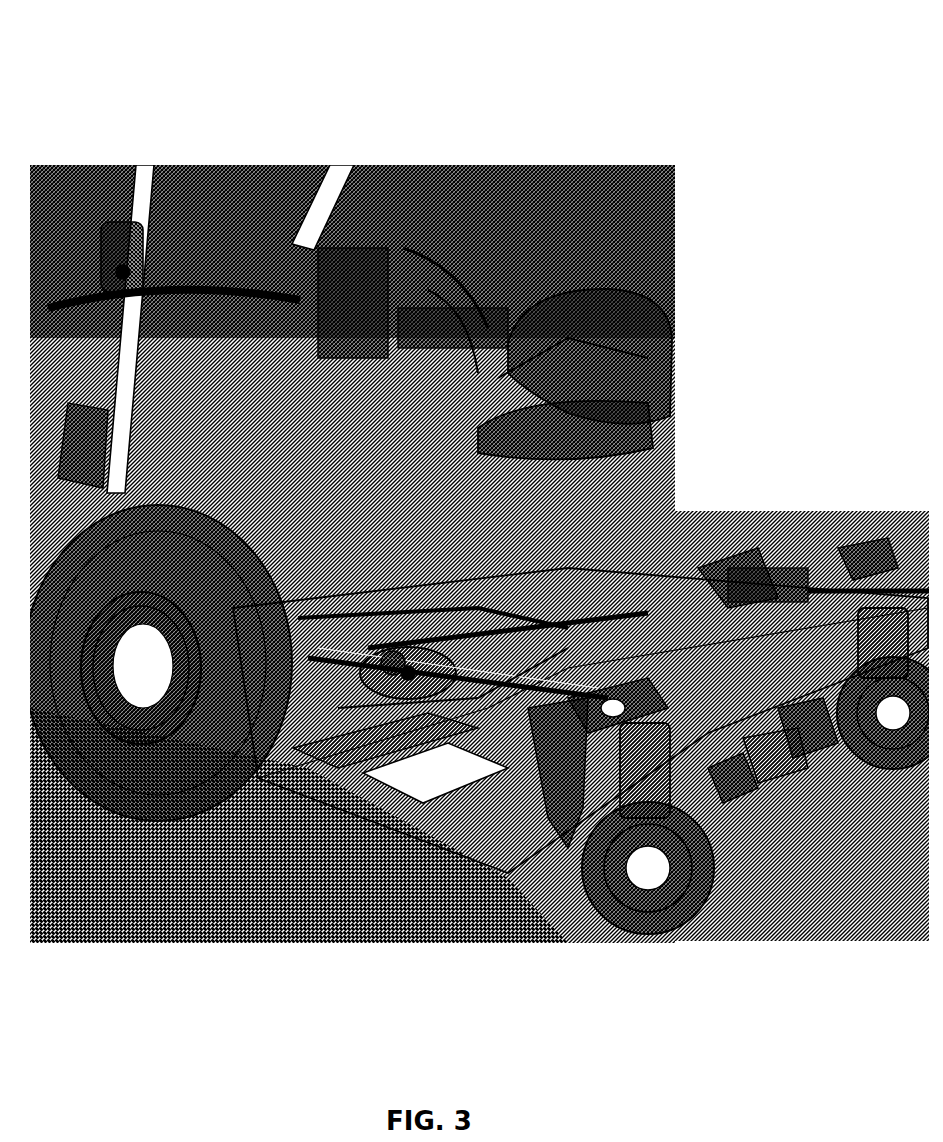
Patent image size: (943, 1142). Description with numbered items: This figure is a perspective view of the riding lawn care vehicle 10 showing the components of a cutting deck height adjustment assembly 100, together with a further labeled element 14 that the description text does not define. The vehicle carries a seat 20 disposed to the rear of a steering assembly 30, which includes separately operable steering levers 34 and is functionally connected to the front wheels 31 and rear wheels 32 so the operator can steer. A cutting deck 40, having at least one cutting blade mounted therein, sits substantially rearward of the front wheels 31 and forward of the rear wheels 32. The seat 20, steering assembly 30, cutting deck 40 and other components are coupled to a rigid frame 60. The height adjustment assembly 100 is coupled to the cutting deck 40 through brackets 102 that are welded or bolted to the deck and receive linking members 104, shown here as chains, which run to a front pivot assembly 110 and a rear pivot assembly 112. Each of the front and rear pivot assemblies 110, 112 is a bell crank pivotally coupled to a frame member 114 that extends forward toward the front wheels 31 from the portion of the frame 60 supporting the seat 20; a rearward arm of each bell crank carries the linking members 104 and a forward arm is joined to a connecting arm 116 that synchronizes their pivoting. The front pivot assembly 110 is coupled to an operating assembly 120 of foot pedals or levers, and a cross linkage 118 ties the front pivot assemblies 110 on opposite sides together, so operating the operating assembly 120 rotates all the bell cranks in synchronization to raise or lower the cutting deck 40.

The riding lawn care vehicle 10 is at (728, 174).
The frame 14 is at (598, 272).
The seat 20 is at (312, 212).
The steering assembly 30 is at (666, 300).
The front wheels 31 is at (880, 765).
The rear wheels 32 is at (140, 760).
The steering levers 34 is at (560, 330).
The cutting deck 40 is at (520, 846).
The frame 60 is at (848, 537).
The cutting deck height adjustment assembly 100 is at (683, 523).
The brackets 102 is at (330, 700).
The linking members 104 is at (300, 700).
The front pivot assembly 110 is at (563, 847).
The rear pivot assembly 112 is at (380, 670).
The frame members 114 is at (720, 538).
The connecting arm 116 is at (460, 762).
The cross linkage 118 is at (775, 745).
The operating assembly 120 is at (713, 778).